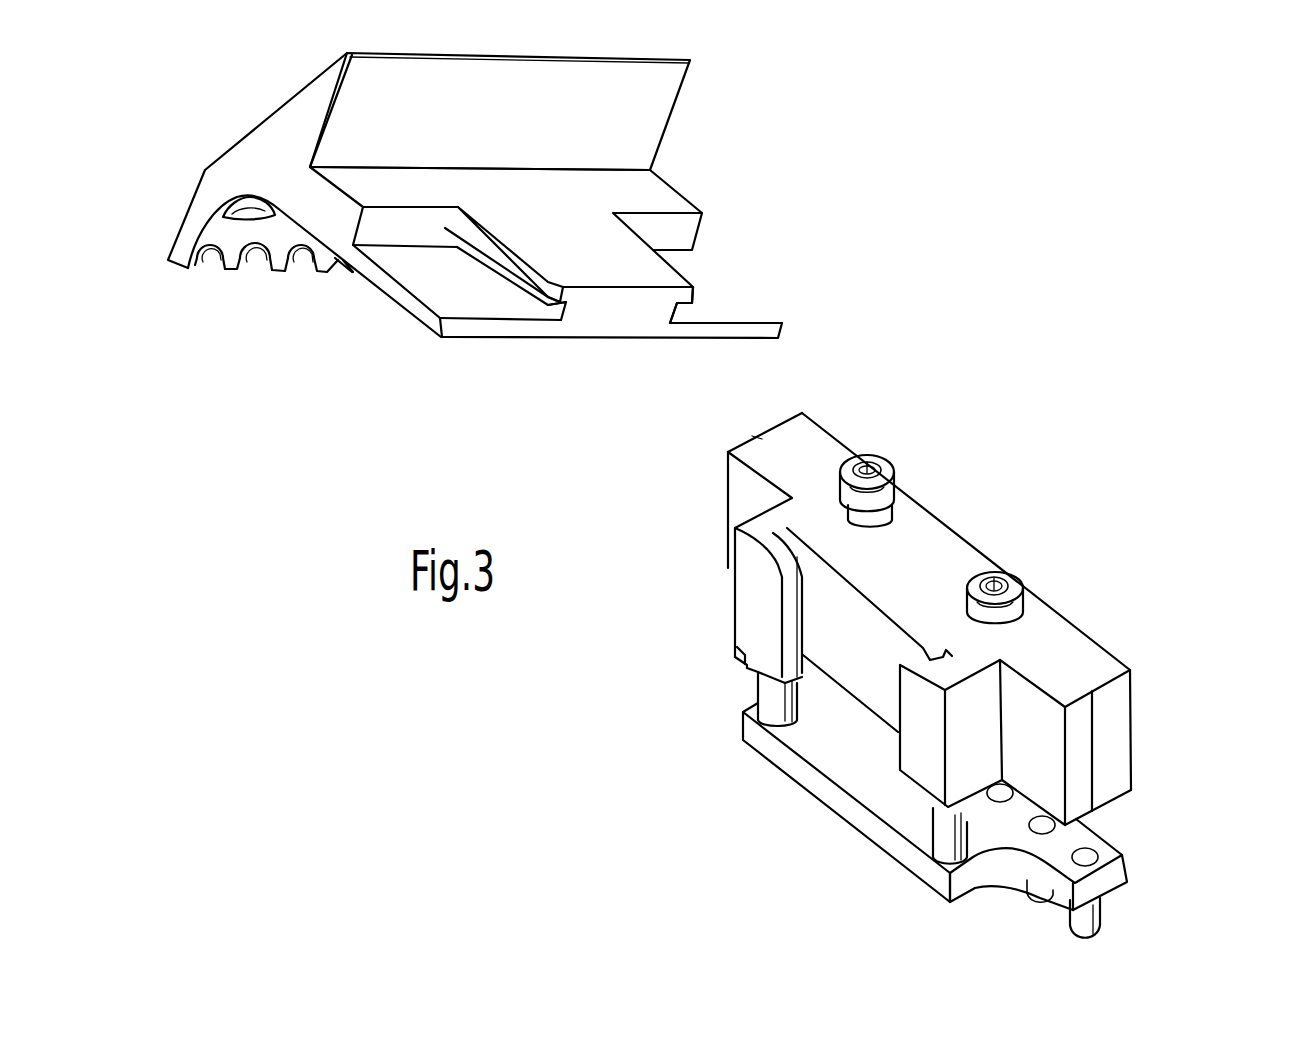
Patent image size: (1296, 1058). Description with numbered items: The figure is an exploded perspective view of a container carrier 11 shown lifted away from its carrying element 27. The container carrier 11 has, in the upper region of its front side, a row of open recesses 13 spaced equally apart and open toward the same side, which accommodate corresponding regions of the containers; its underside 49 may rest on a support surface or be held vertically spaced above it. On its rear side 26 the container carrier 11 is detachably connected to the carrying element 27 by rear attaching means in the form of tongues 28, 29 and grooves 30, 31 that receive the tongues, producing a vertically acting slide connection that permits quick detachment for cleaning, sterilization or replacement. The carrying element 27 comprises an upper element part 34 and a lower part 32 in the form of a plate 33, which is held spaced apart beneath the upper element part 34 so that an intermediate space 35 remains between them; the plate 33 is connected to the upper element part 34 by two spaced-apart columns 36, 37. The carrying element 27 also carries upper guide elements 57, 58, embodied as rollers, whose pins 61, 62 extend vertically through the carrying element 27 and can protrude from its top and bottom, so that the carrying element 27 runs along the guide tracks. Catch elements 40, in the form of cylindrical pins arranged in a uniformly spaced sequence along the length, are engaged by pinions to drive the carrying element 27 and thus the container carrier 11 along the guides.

The container carrier 11 is at (793, 385).
The recesses 13 is at (250, 262).
The rear side 26 is at (580, 215).
The carrying element 27 is at (1080, 627).
The tongue 28 is at (650, 268).
The tongue 29 is at (767, 643).
The groove 30 is at (686, 309).
The groove 31 is at (808, 614).
The lower part 32 is at (1118, 860).
The plate 33 is at (827, 743).
The upper element part 34 is at (1075, 674).
The intermediate space 35 is at (750, 687).
The column 36 is at (743, 718).
The column 37 is at (947, 833).
The catch element 40 is at (1087, 928).
The underside 49 is at (643, 127).
The upper guide element 57 is at (1013, 595).
The upper guide element 58 is at (889, 458).
The pin 61 is at (1000, 573).
The pin 62 is at (868, 458).